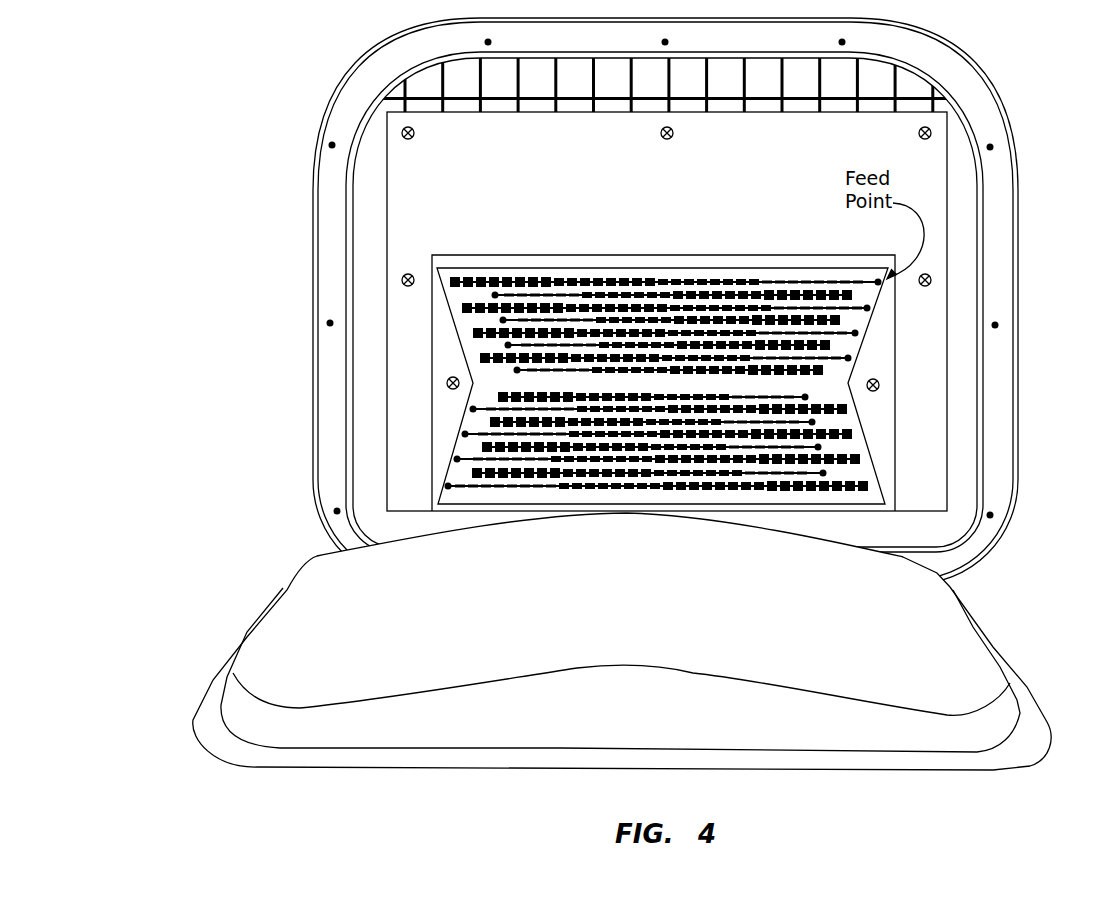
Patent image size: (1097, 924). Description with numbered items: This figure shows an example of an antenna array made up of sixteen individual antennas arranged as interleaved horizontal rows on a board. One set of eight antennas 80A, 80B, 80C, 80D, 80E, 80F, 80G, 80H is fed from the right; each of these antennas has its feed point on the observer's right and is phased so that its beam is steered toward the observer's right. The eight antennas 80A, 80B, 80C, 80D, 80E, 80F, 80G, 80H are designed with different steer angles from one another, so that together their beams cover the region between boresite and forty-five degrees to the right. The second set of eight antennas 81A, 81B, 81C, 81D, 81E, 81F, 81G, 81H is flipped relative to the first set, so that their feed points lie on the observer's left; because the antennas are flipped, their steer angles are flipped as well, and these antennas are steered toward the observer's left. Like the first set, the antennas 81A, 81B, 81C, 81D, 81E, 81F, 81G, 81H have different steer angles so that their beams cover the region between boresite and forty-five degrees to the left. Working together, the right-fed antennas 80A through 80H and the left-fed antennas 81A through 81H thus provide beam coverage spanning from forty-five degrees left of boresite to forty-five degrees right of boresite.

The antenna 80A is at (446, 282).
The antenna 80B is at (458, 308).
The antenna 80C is at (469, 333).
The antenna 80D is at (476, 358).
The antenna 80E is at (468, 473).
The antenna 80F is at (478, 447).
The antenna 80G is at (486, 422).
The antenna 80H is at (494, 397).
The antenna 81A is at (856, 295).
The antenna 81B is at (844, 320).
The antenna 81C is at (834, 345).
The antenna 81D is at (827, 370).
The antenna 81E is at (872, 486).
The antenna 81F is at (864, 459).
The antenna 81G is at (856, 434).
The antenna 81H is at (851, 409).